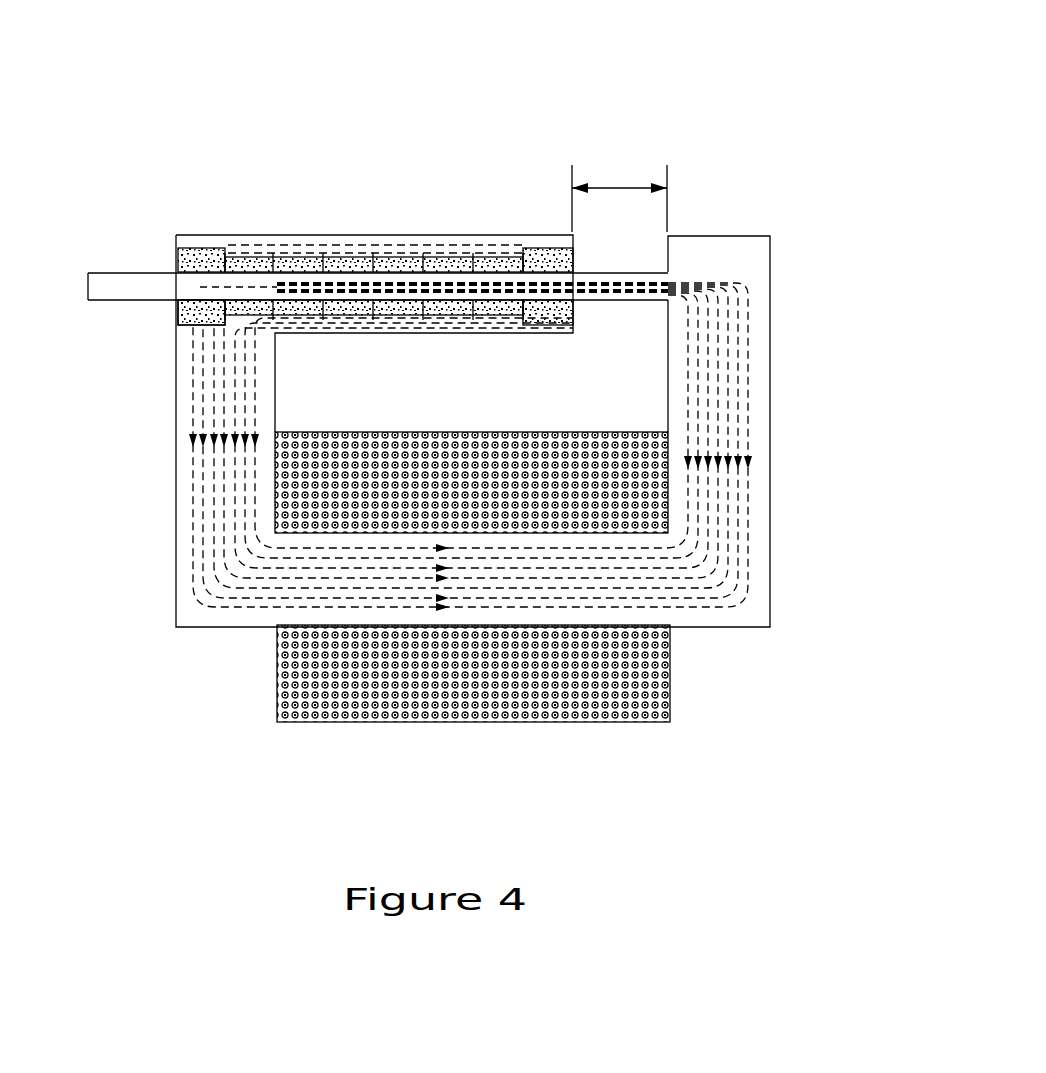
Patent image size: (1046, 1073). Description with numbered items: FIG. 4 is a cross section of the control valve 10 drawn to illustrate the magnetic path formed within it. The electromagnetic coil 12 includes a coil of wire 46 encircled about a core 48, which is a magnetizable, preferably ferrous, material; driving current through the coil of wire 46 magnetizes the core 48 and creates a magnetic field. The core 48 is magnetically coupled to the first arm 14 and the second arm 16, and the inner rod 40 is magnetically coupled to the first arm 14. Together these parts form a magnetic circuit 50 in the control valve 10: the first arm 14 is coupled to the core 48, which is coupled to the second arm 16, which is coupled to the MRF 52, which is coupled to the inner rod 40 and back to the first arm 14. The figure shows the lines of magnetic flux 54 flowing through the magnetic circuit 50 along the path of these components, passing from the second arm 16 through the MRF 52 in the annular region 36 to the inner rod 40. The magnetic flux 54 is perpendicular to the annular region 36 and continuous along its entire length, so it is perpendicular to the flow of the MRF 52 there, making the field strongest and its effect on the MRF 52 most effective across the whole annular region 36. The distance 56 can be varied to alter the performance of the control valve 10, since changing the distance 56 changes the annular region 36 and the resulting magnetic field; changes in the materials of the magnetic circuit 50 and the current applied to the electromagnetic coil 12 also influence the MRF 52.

The control valve 10 is at (412, 118).
The electromagnetic coil 12 is at (260, 666).
The first arm 14 is at (770, 292).
The second arm 16 is at (176, 442).
The annular region 36 is at (410, 260).
The inner rod 40 is at (130, 275).
The coil of wire 46 is at (545, 688).
The core 48 is at (628, 600).
The magnetic circuit 50 is at (770, 400).
The MRF 52 is at (178, 313).
The lines of magnetic flux 54 is at (210, 547).
The distance 56 is at (623, 187).